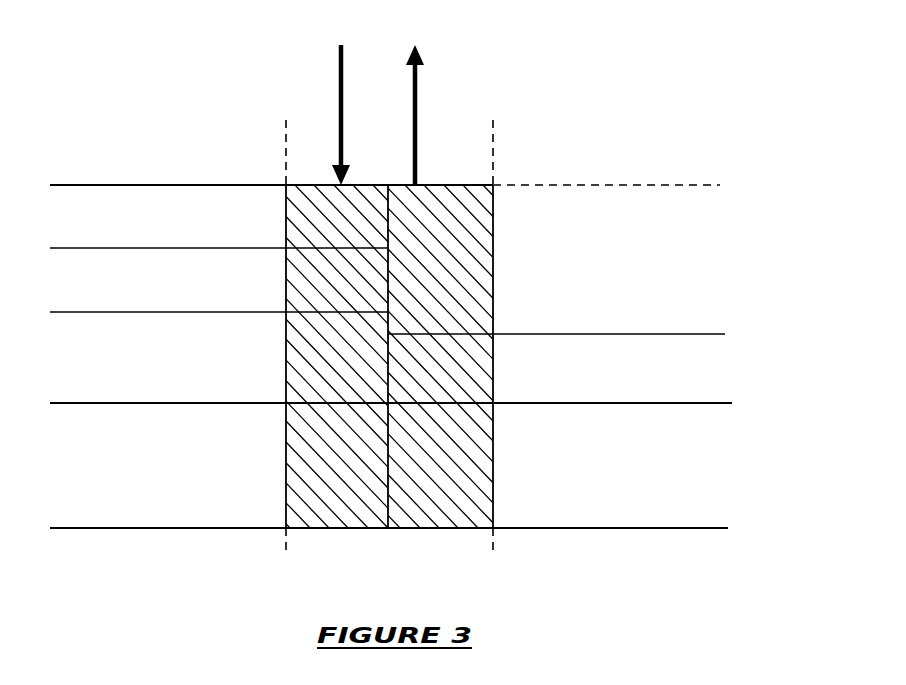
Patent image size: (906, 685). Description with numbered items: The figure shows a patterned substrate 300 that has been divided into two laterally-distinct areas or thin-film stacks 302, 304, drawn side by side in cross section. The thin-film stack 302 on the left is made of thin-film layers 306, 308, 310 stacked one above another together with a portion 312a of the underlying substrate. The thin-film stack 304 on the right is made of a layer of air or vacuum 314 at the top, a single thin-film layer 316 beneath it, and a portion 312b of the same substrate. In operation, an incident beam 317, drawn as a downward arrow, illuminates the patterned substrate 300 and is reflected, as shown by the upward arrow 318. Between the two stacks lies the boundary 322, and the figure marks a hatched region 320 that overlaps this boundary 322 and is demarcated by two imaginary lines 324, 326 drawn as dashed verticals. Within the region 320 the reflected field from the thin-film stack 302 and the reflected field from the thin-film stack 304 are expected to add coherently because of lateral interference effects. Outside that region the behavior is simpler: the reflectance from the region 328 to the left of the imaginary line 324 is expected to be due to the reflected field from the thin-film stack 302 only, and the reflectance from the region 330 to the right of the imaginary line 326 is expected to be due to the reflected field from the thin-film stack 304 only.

The patterned substrate 300 is at (123, 133).
The thin-film stack 302 is at (200, 173).
The thin-film stack 304 is at (567, 172).
The thin-film layer 306 is at (138, 223).
The thin-film layer 308 is at (138, 285).
The thin-film layer 310 is at (138, 376).
The portion of substrate 312a is at (193, 466).
The portion of substrate 312b is at (637, 466).
The layer of air or vacuum 314 is at (580, 271).
The thin-film layer 316 is at (580, 375).
The incident beam 317 is at (340, 82).
The reflected beam 318 is at (417, 92).
The region 320 is at (390, 535).
The boundary 322 is at (387, 188).
The imaginary line 324 is at (286, 125).
The imaginary line 326 is at (493, 130).
The region 328 is at (170, 532).
The region 330 is at (592, 535).